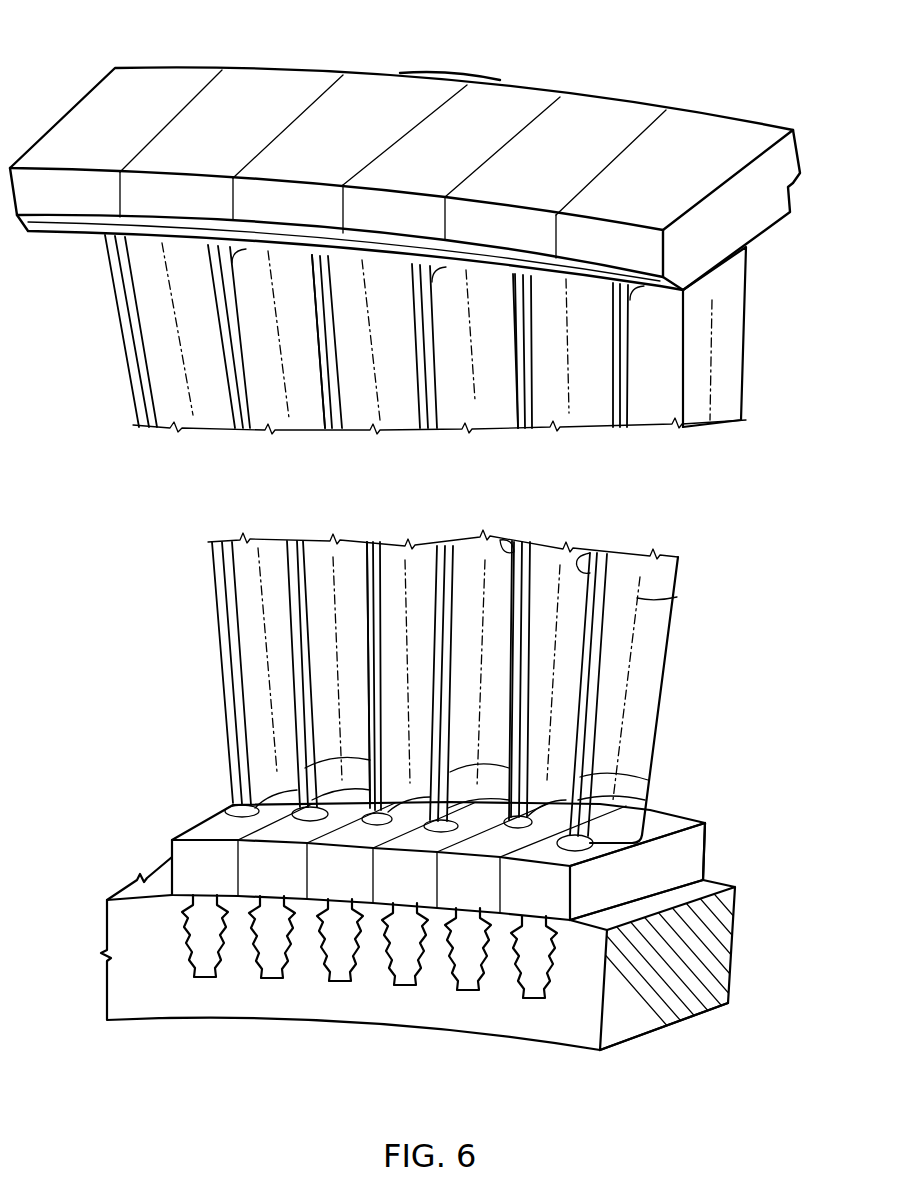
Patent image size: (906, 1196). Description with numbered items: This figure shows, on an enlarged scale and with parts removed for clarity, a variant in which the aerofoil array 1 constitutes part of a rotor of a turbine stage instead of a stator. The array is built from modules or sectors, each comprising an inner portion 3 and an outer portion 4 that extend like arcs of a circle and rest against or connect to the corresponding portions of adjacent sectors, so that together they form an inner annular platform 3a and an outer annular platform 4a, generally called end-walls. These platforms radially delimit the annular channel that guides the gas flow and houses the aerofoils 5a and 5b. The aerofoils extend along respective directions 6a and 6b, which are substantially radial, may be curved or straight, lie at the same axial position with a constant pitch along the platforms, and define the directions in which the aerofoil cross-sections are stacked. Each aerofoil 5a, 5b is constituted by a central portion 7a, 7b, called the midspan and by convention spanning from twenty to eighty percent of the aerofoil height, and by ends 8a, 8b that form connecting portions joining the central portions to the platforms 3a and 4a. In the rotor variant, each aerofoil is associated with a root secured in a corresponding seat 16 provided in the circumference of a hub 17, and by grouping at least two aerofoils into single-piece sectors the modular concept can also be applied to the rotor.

The aerofoil array 1 is at (697, 1060).
The inner portion 3 is at (200, 832).
The inner annular platform 3a is at (712, 850).
The outer portion 4 is at (158, 83).
The outer annular platform 4a is at (457, 72).
The aerofoil 5a is at (157, 383).
The aerofoil 5b is at (730, 363).
The direction 6a is at (257, 565).
The direction 6b is at (672, 596).
The central portion 7a is at (500, 540).
The central portion 7b is at (583, 566).
The end 8a is at (233, 787).
The end 8b is at (600, 778).
The firtree slot 16 is at (262, 978).
The hub 17 is at (157, 1008).